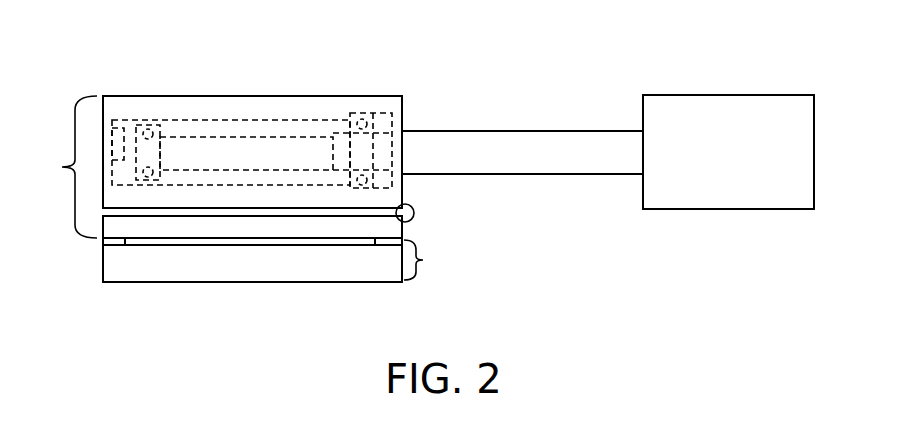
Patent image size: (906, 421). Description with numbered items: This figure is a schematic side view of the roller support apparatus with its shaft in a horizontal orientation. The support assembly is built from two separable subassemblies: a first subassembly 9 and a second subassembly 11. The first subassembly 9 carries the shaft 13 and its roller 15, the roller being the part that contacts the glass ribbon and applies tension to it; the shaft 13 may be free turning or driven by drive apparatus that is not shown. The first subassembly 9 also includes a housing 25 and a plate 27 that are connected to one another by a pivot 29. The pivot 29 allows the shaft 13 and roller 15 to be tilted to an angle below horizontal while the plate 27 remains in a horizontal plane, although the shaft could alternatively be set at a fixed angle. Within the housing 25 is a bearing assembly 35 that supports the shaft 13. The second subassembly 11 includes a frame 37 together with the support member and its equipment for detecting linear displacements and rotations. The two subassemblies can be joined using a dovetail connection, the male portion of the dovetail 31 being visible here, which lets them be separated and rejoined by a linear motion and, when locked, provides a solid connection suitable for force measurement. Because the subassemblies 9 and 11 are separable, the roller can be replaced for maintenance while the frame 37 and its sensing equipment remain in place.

The first subassembly of support assembly 9 is at (62, 167).
The second subassembly of support assembly 11 is at (431, 260).
The shaft 13 is at (533, 155).
The roller 15 is at (728, 190).
The housing 25 is at (220, 96).
The plate 27 is at (127, 230).
The pivot 29 is at (414, 216).
The male portion of dovetail 31 is at (290, 240).
The bearing assembly 35 is at (124, 120).
The frame 37 is at (182, 265).